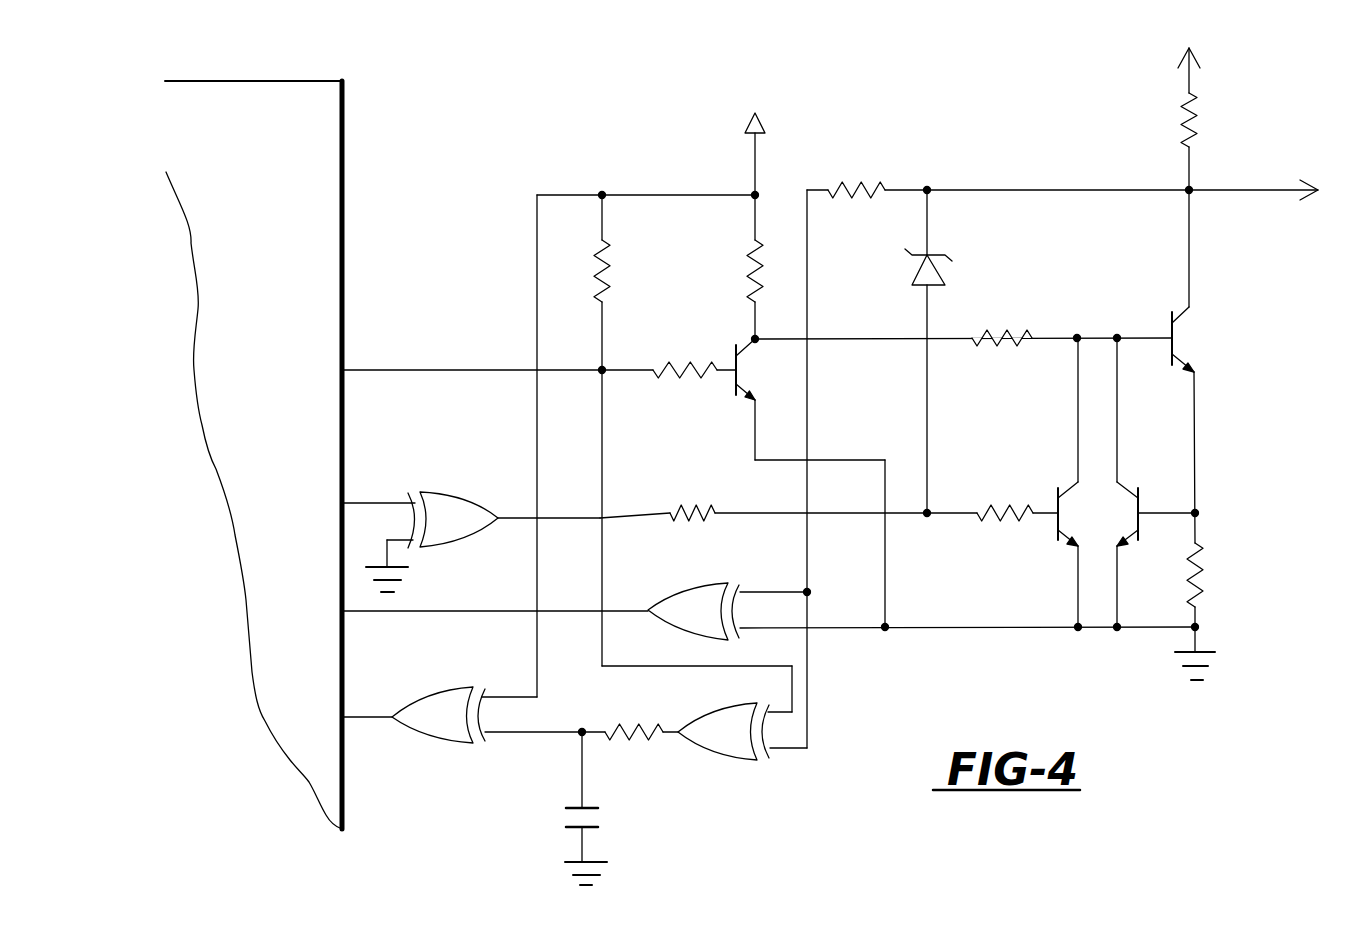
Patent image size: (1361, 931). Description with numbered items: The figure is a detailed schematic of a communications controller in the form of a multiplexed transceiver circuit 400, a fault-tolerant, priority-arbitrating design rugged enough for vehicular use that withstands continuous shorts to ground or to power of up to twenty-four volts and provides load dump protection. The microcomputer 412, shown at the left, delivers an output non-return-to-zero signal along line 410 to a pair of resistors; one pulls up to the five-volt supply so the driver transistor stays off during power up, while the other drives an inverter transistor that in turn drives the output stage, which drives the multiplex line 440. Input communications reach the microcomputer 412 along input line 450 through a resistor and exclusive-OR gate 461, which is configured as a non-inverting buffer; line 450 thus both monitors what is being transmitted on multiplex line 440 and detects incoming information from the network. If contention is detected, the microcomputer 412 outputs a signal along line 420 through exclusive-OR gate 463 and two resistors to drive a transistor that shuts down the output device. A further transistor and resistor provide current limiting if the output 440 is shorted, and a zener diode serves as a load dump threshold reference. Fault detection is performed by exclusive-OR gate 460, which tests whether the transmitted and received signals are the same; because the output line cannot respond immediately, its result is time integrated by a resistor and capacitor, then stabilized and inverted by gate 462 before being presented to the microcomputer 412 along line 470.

The multiplexed transceiver circuit 400 is at (572, 150).
The output line 410 is at (432, 368).
The microcomputer 412 is at (328, 222).
The contention signal line 420 is at (375, 502).
The multiplex line 440 is at (1260, 190).
The input line 450 is at (422, 612).
The exclusive-OR gate 460 is at (723, 758).
The exclusive-OR gate 461 is at (668, 593).
The exclusive-OR gate 462 is at (438, 747).
The exclusive-OR gate 463 is at (467, 492).
The fault report line 470 is at (372, 722).